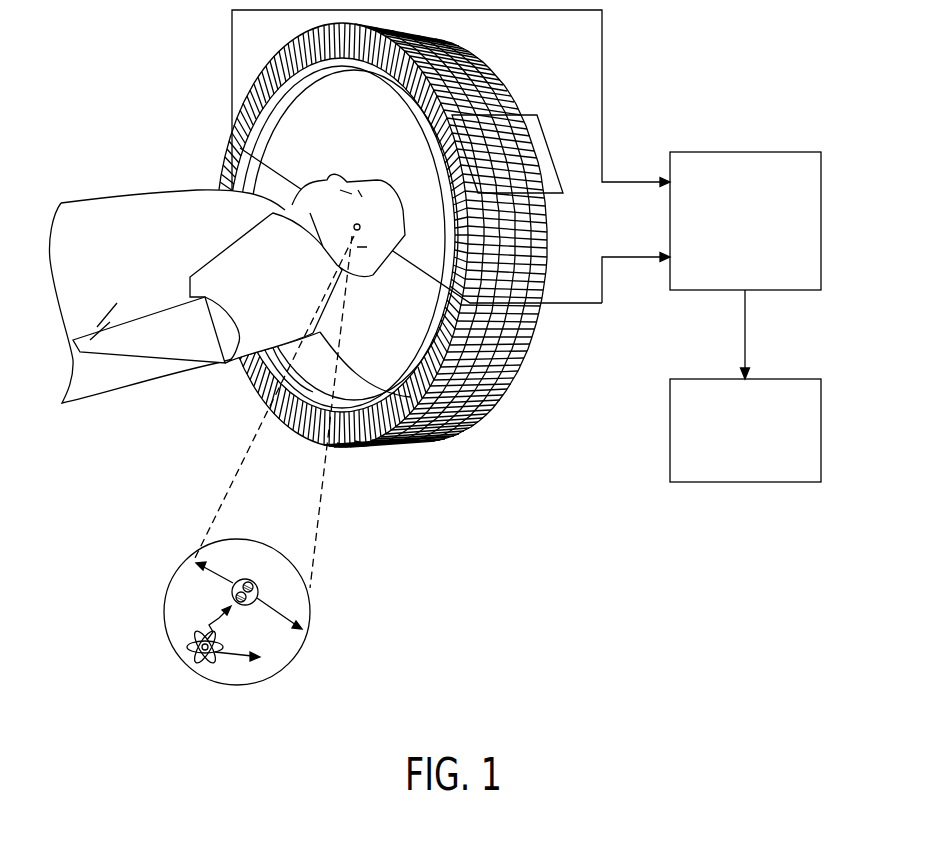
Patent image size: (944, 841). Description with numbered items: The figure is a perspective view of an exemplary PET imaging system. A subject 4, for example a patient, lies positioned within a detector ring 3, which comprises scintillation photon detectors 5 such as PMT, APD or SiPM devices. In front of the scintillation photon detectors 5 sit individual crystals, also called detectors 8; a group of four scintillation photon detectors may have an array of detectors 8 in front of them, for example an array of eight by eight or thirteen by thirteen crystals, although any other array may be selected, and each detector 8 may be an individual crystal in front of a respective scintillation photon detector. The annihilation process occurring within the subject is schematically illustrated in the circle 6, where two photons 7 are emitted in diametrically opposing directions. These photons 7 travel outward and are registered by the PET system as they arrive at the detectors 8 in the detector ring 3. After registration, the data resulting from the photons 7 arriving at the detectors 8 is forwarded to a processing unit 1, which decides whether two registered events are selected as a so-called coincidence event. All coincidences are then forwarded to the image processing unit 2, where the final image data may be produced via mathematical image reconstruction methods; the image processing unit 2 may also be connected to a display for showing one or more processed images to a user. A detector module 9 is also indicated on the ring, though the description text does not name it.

The processing unit 1 is at (781, 152).
The image processing unit 2 is at (781, 379).
The detector ring 3 is at (512, 76).
The subject 4 is at (153, 208).
The scintillation photon detectors 5 is at (500, 397).
The circle 6 is at (243, 683).
The photons 7 is at (193, 562).
The detectors 8 is at (408, 392).
The detector module 9 is at (536, 115).